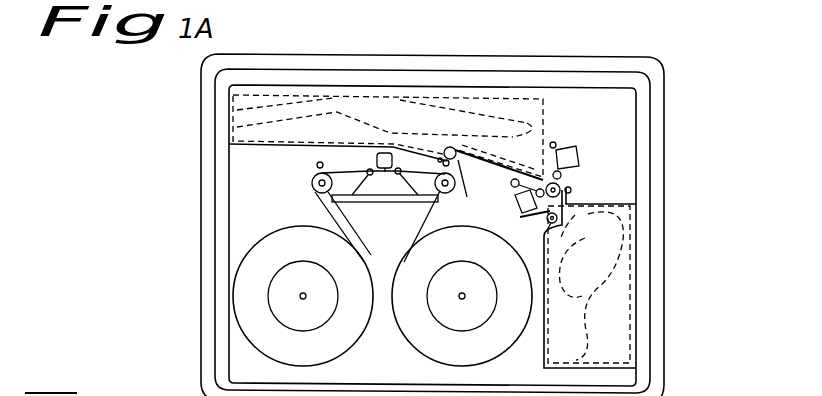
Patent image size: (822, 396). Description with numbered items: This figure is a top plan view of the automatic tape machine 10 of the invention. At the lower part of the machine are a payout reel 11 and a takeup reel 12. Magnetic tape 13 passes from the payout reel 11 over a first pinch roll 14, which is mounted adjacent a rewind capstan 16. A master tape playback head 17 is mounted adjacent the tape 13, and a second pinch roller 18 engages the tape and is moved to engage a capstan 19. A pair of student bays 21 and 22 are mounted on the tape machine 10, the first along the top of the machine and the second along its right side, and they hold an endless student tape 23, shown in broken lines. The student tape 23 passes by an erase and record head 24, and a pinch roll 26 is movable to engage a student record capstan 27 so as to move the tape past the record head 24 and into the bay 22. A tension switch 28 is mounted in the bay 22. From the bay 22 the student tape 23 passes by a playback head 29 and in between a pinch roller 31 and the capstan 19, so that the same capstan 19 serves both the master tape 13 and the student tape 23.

The tape machine 10 is at (683, 116).
The payout reel 11 is at (285, 285).
The takeup reel 12 is at (447, 308).
The magnetic tape 13 is at (326, 205).
The first pinch roll 14 is at (311, 186).
The rewind capstan 16 is at (318, 163).
The master tape playback head 17 is at (385, 173).
The second pinch roller 18 is at (445, 193).
The capstan 19 is at (442, 156).
The student bay 21 is at (470, 107).
The student bay 22 is at (617, 273).
The student tape 23 is at (531, 120).
The erase and record head 24 is at (567, 150).
The pinch roll 26 is at (557, 182).
The student record capstan 27 is at (572, 190).
The tension switch 28 is at (562, 235).
The playback head 29 is at (519, 216).
The pinch roller 31 is at (476, 188).